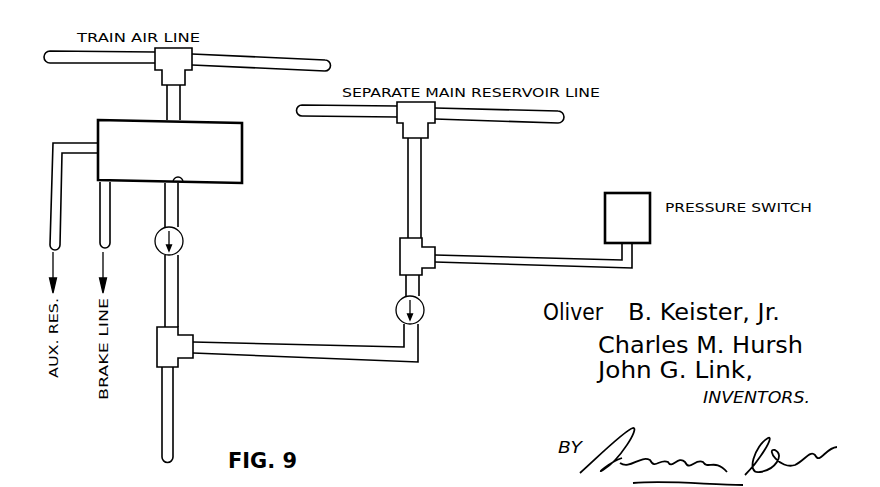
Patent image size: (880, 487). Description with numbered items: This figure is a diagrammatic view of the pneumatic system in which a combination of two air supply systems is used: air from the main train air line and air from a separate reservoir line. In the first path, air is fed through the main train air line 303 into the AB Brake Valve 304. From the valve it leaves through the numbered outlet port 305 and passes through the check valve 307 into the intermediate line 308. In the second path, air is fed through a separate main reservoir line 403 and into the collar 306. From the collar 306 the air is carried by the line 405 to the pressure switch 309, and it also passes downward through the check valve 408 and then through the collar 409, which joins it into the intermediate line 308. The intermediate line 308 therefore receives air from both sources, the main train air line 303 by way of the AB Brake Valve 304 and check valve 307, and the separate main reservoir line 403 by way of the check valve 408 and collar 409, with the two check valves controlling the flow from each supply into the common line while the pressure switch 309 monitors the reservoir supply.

The main train air line 303 is at (112, 62).
The AB Brake Valve 304 is at (242, 157).
The No. 11 port of AB valve 305 is at (183, 183).
The check valve 307 is at (157, 238).
The intermediate line 308 is at (163, 397).
The collar 409 is at (182, 352).
The separate main reservoir line 403 is at (347, 115).
The collar 306 is at (418, 252).
The line 405 is at (535, 262).
The pressure switch 309 is at (613, 205).
The check valve 408 is at (397, 306).